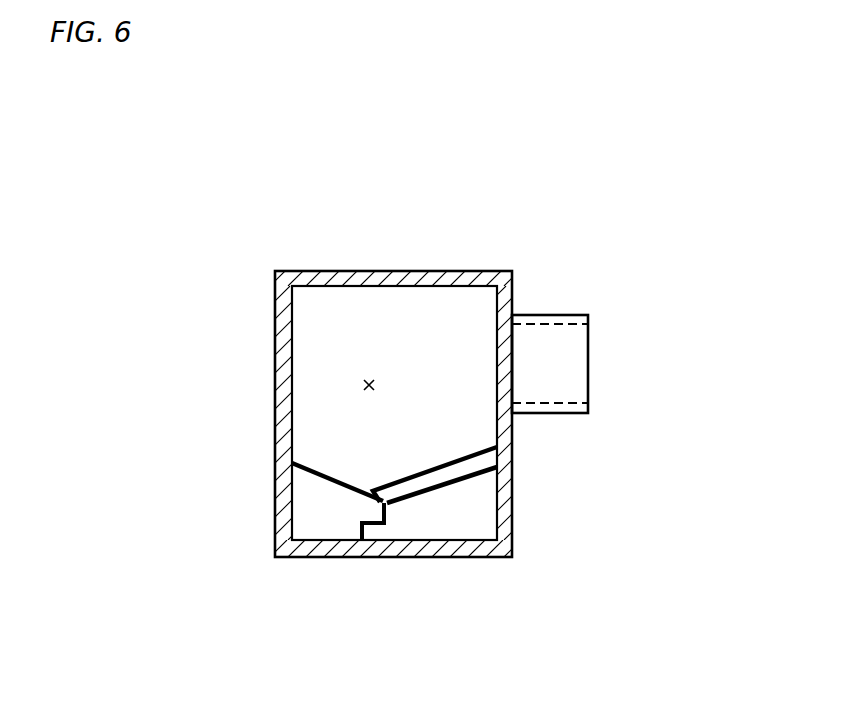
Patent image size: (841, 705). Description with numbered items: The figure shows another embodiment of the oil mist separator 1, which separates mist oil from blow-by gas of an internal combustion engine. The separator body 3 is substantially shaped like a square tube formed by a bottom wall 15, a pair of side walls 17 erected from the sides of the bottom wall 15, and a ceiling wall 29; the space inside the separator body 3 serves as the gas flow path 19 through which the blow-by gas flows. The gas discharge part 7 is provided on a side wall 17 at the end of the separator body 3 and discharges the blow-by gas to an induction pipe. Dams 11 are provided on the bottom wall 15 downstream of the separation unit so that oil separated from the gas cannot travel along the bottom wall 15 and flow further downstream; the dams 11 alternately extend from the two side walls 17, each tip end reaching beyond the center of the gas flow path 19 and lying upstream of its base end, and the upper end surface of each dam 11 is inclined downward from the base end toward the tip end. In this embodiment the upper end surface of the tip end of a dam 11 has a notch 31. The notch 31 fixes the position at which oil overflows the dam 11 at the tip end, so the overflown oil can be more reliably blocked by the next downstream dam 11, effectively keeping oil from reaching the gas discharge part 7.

The oil mist separator 1 is at (575, 179).
The separator body 3 is at (503, 271).
The gas discharge part 7 is at (563, 338).
The dam 11 is at (473, 463).
The bottom wall 15 is at (402, 550).
The side wall 17 is at (280, 414).
The gas flow path 19 is at (365, 385).
The ceiling wall 29 is at (384, 273).
The notch 31 is at (372, 517).